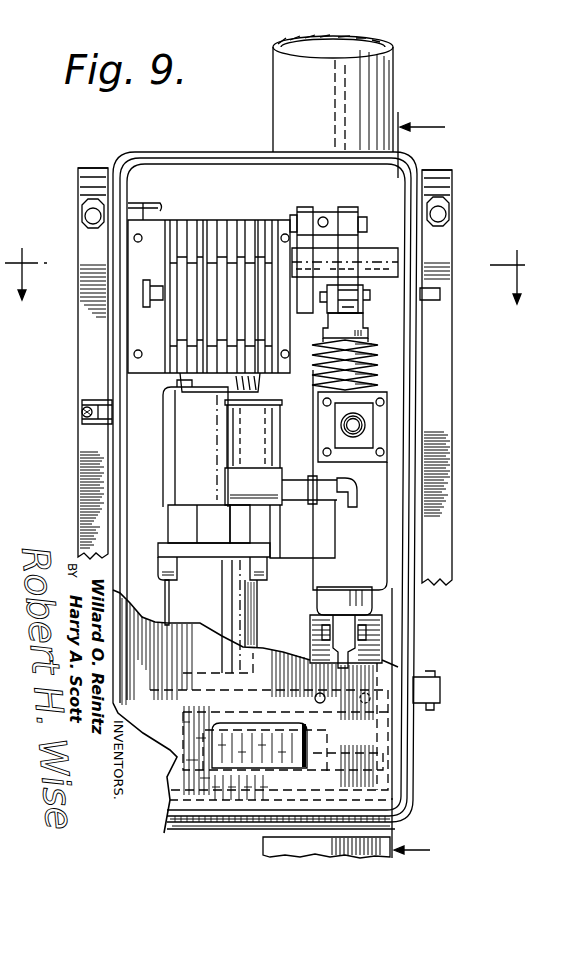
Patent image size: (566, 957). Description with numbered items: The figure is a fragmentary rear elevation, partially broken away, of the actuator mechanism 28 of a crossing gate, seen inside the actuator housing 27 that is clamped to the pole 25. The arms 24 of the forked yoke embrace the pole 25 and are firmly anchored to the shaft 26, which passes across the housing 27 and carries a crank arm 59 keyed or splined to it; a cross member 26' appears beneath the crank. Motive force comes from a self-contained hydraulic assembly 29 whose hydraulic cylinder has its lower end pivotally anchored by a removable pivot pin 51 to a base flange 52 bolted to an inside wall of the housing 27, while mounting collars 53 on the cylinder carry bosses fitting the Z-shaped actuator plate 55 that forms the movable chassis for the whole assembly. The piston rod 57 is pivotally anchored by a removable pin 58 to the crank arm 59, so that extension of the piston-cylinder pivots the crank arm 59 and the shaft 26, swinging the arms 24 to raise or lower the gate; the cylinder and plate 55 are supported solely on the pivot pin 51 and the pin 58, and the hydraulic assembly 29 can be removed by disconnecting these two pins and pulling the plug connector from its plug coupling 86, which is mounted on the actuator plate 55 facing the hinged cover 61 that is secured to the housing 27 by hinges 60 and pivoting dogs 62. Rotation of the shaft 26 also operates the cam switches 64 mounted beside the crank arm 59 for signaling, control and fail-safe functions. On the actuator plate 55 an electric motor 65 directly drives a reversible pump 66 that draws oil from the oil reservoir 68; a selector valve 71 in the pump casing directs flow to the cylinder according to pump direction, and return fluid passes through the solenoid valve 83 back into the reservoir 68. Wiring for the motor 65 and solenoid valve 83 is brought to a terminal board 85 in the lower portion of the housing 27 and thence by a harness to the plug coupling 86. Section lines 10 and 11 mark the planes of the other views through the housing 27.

The section line 10- 10 is at (418, 479).
The section line 11- 11 is at (274, 283).
The arms 24 is at (84, 484).
The pole 25 is at (388, 58).
The shaft 26 is at (262, 209).
The cross member 26' is at (345, 236).
The actuator housing 27 is at (202, 146).
The actuator mechanism 28 is at (248, 798).
The hydraulic assembly 29 is at (390, 528).
The pivot pin 51 is at (368, 640).
The base flange 52 is at (376, 625).
The mounting collars 53 is at (350, 603).
The actuator plate 55 is at (335, 572).
The piston rod 57 is at (355, 321).
The pin 58 is at (370, 296).
The crank arm 59 is at (343, 210).
The hinges 60 is at (432, 712).
The hinged cover 61 is at (372, 806).
The pivoting dogs 62 is at (82, 412).
The cam switches 64 is at (259, 212).
The electric motor 65 is at (195, 454).
The pump 66 is at (178, 515).
The oil reservoir 68 is at (183, 596).
The selector valve 71 is at (190, 531).
The solenoid valve 83 is at (262, 490).
The terminal board 85 is at (405, 738).
The plug coupling 86 is at (355, 425).